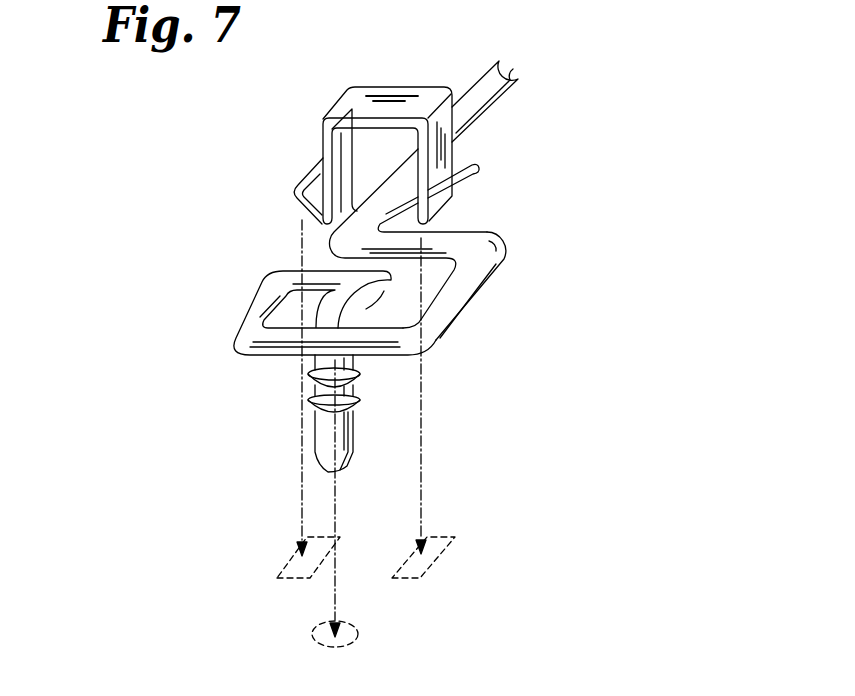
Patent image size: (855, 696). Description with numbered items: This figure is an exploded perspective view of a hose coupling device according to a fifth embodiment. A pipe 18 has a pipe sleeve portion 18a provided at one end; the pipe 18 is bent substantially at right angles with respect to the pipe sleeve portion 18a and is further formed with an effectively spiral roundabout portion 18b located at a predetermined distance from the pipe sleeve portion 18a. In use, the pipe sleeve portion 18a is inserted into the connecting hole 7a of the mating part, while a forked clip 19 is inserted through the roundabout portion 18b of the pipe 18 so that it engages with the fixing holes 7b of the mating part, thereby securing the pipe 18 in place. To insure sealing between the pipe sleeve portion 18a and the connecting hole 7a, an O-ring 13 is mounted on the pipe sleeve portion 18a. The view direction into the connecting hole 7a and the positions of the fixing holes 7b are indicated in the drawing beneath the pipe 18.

The forked clip 19 is at (392, 86).
The pipe 18 is at (486, 73).
The pipe sleeve portion 18a is at (316, 437).
The roundabout portion 18b is at (262, 291).
The O-ring 13 is at (316, 400).
The connecting hole 7a is at (312, 637).
The fixing holes 7b is at (278, 571).